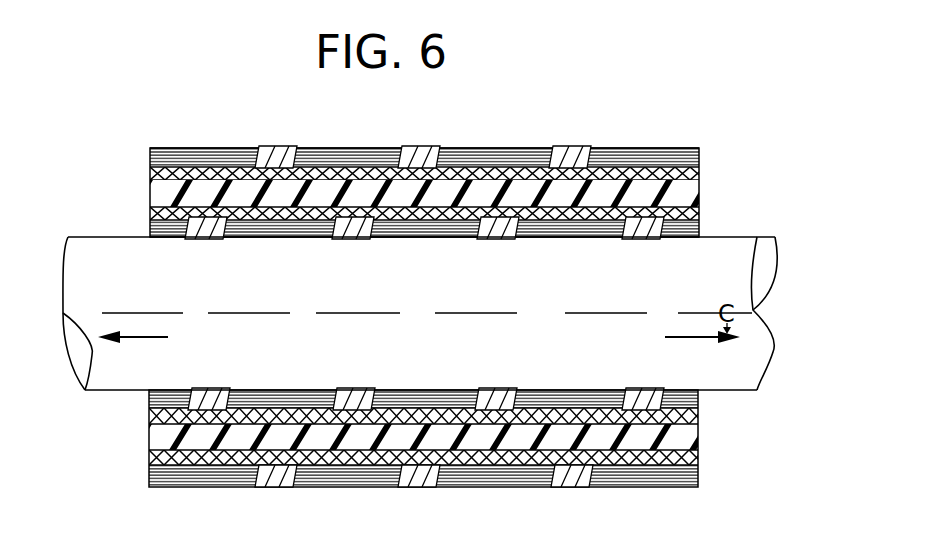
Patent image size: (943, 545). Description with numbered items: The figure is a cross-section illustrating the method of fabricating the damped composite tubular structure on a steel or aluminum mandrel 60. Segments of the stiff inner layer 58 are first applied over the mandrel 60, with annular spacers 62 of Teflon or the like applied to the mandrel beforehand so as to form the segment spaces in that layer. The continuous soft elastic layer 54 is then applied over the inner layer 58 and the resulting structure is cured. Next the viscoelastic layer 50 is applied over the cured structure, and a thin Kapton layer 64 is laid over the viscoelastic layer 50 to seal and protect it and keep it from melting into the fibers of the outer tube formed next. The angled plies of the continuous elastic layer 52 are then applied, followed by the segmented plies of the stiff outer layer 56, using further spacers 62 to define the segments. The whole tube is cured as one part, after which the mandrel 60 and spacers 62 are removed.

The viscoelastic layer 50 is at (699, 195).
The continuous elastic layer 52 is at (699, 168).
The continuous elastic layer 54 is at (699, 212).
The outer segmented stiff layer 56 is at (676, 148).
The inner segmented stiff layer 58 is at (150, 232).
The mandrel 60 is at (746, 253).
The annular spacers 62 is at (278, 148).
The Kapton layer 64 is at (150, 182).